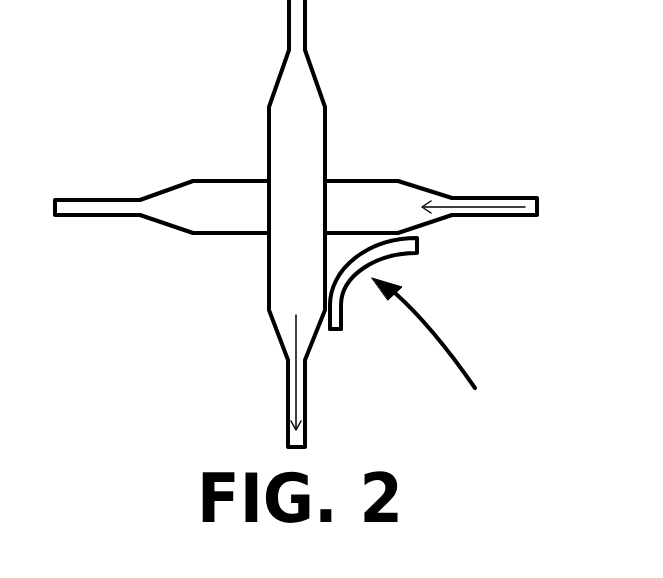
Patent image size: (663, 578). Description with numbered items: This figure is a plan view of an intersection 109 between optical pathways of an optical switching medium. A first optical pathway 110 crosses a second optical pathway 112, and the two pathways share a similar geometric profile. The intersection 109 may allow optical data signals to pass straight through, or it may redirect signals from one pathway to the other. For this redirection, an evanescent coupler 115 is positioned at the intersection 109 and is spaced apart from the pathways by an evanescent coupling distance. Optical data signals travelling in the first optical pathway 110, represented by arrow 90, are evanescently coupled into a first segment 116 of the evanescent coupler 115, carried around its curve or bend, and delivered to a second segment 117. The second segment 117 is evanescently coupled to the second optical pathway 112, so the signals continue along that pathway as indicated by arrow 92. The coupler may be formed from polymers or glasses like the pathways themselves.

The intersection 109 is at (296, 223).
The first optical pathway 110 is at (358, 180).
The second optical pathway 112 is at (267, 266).
The arrow 90 is at (481, 200).
The arrow 92 is at (293, 350).
The first segment 116 is at (413, 253).
The second segment 117 is at (343, 317).
The evanescent coupler 115 is at (437, 350).